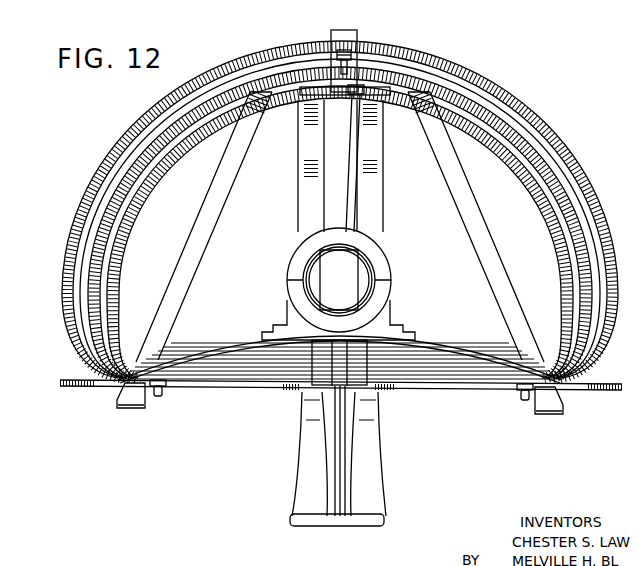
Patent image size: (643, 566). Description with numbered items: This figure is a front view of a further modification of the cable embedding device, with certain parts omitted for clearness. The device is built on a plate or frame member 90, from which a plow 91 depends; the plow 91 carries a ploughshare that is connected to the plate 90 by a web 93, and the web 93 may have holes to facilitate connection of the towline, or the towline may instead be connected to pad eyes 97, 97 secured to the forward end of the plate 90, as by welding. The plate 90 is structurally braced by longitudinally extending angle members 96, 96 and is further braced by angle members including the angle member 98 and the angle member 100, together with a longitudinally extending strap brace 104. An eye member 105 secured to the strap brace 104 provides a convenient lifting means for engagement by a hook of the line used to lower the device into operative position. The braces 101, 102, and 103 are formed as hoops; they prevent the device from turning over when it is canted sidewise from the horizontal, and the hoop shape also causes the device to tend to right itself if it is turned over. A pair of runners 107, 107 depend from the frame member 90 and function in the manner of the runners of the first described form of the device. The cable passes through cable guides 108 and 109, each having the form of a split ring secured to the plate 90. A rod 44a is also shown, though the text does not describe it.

The plate or frame member 90 is at (590, 385).
The plow 91 is at (356, 522).
The web 93 is at (342, 490).
The longitudinally extending angle members 96 is at (353, 366).
The pad eyes 97 is at (163, 392).
The angle member 98 is at (176, 303).
The angle member 100 is at (297, 192).
The hoop brace 101 is at (119, 254).
The hoop brace 102 is at (100, 215).
The hoop brace 103 is at (103, 176).
The strap brace 104 is at (356, 22).
The eye member 105 is at (358, 58).
The runners 107 is at (134, 409).
The cable guide 108 is at (379, 266).
The cable guide 109 is at (355, 305).
The rod 44a is at (358, 199).